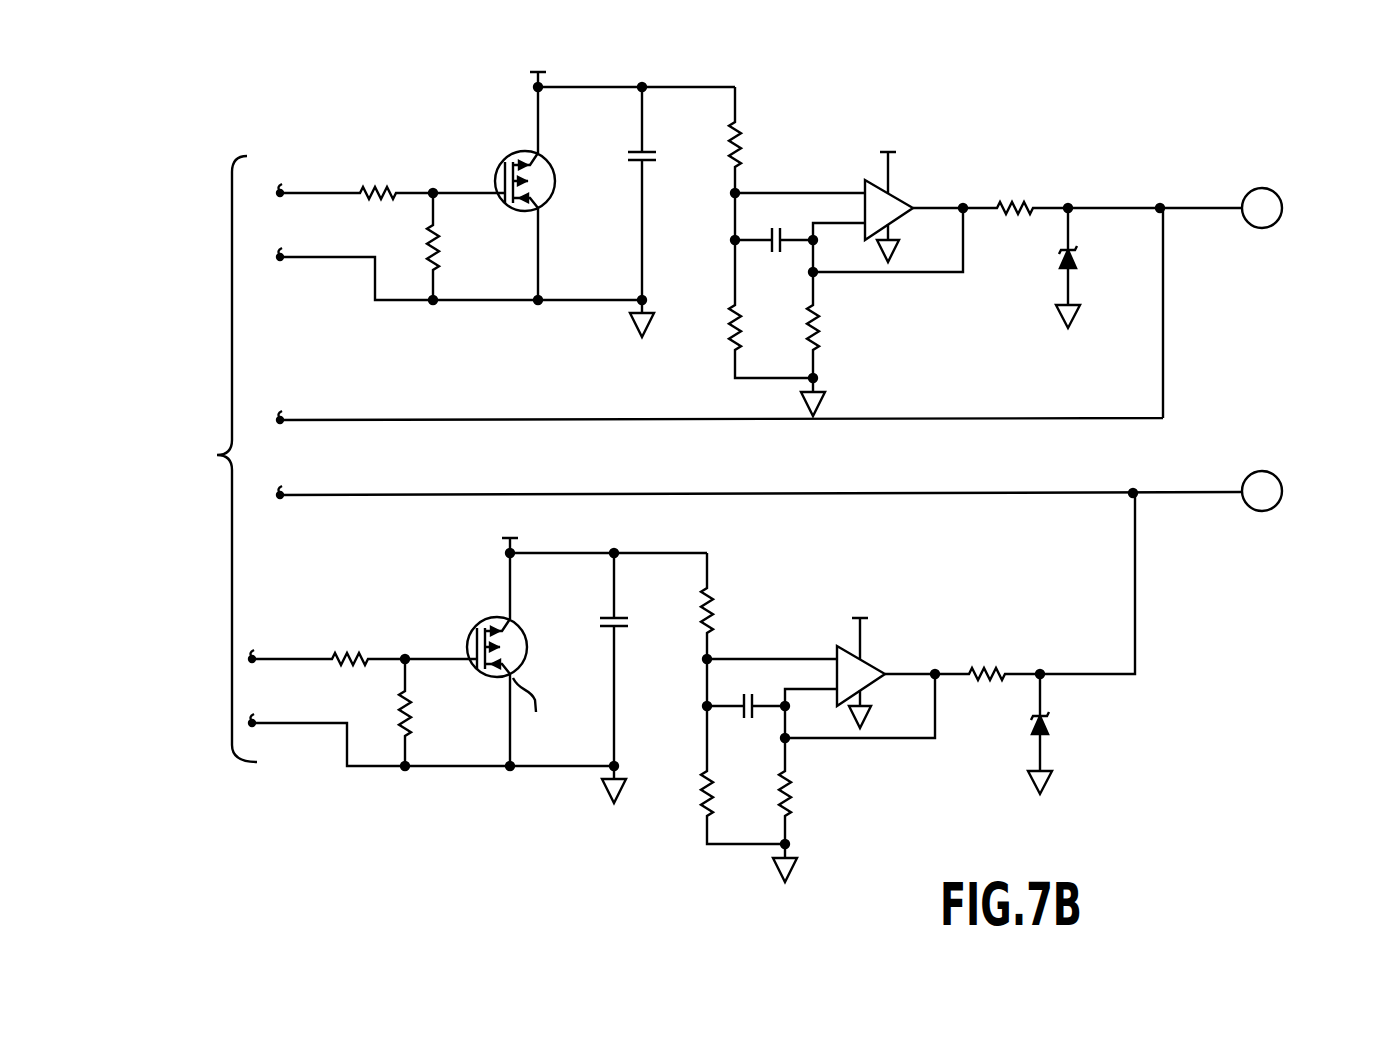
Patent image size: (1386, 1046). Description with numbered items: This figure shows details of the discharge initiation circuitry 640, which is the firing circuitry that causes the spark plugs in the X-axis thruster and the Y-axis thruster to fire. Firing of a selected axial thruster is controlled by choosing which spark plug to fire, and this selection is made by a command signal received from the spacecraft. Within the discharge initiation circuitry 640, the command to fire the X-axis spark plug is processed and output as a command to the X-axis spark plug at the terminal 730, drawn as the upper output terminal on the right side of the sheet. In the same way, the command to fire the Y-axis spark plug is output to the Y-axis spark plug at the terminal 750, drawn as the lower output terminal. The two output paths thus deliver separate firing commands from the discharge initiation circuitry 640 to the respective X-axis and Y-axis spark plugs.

The discharge initiation circuitry 640 is at (332, 72).
The terminal 730 is at (1276, 180).
The terminal 750 is at (1284, 464).